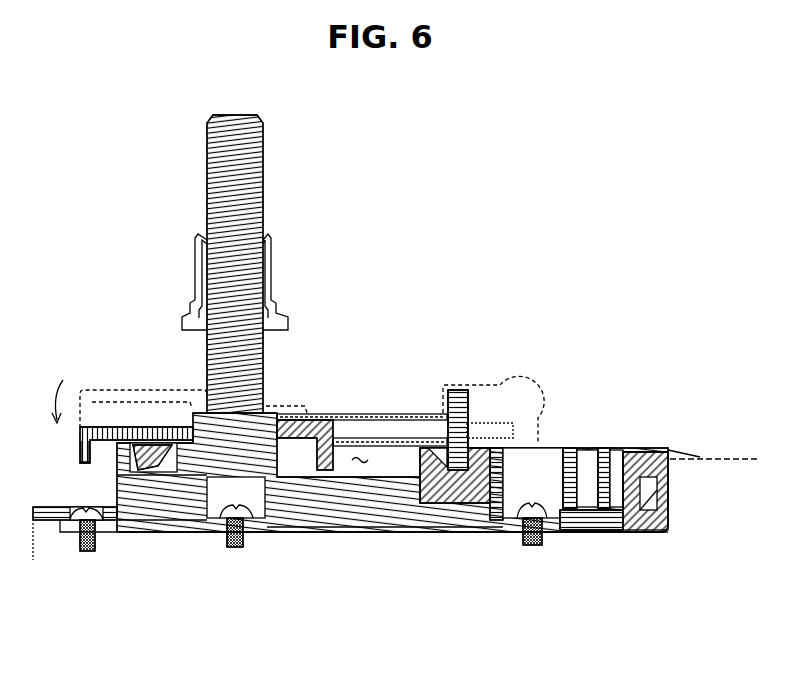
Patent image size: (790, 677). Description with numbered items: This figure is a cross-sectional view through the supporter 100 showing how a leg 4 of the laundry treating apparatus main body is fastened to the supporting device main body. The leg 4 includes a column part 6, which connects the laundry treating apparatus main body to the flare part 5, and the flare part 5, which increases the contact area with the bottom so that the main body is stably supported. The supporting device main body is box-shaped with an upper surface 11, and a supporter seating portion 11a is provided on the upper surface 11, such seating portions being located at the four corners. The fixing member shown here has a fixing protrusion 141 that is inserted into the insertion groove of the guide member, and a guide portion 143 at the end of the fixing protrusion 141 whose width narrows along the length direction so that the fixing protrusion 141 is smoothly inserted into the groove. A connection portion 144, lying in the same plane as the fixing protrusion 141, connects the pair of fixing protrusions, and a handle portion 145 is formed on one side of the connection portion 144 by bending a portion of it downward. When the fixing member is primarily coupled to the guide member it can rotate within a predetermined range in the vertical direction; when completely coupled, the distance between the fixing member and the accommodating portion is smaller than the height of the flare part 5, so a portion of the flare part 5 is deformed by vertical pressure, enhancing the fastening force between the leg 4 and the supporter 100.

The supporter 100 is at (437, 151).
The upper surface 11 is at (713, 458).
The supporter seating portion 11a is at (185, 523).
The leg 4 is at (348, 356).
The column part 6 is at (263, 359).
The flare part 5 is at (322, 417).
The fixing protrusion 141 is at (400, 415).
The guide portion 143 is at (495, 423).
The connection portion 144 is at (120, 410).
The handle portion 145 is at (80, 452).